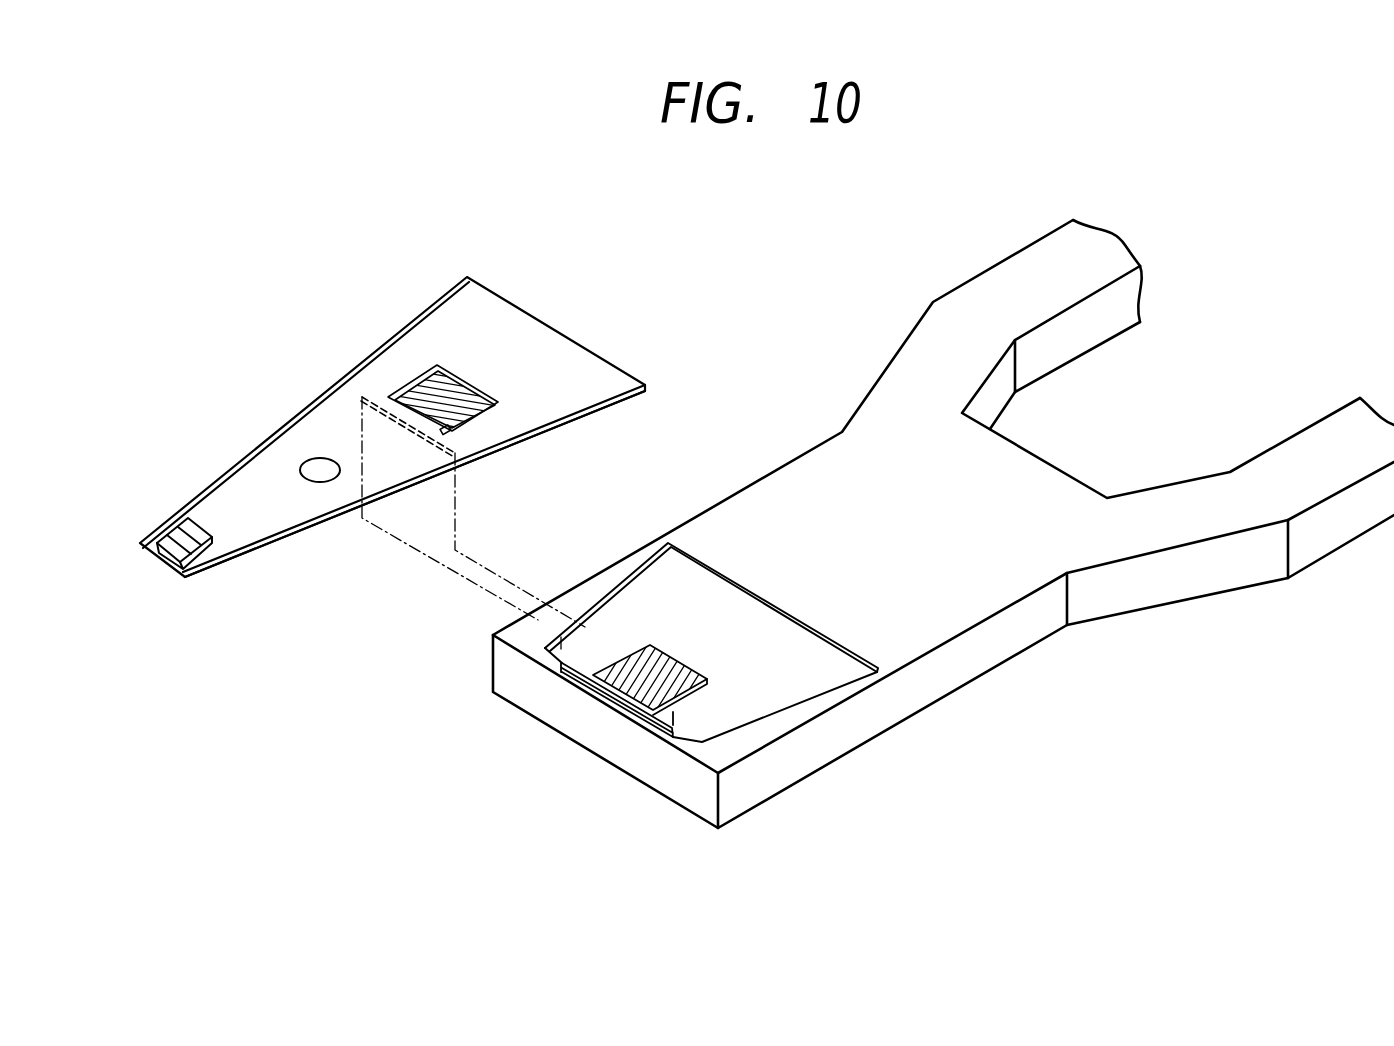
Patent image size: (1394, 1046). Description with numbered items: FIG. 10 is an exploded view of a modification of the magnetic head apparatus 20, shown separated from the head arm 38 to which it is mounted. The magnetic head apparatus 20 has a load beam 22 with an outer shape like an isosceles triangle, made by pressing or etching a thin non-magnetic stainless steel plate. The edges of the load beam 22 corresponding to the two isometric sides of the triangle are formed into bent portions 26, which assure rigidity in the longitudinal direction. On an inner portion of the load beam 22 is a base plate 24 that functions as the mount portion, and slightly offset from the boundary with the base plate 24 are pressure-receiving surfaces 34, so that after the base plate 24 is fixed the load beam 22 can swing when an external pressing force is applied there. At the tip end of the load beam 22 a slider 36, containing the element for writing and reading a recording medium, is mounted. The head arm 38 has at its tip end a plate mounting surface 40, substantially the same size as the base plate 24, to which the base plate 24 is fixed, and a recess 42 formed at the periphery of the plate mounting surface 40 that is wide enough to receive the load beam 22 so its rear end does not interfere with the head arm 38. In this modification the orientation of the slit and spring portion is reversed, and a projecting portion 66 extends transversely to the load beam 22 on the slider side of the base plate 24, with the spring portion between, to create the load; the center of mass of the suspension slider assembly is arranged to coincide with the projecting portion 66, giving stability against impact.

The magnetic head apparatus 20 is at (385, 428).
The load beam 22 is at (500, 315).
The base plate 24 is at (460, 408).
The bent portion 26 is at (252, 550).
The pressure-receiving surface 34 is at (368, 403).
The slider 36 is at (180, 527).
The head arm 38 is at (1040, 483).
The plate mounting surface 40 is at (680, 667).
The recess 42 is at (780, 630).
The projecting portion 66 is at (643, 723).